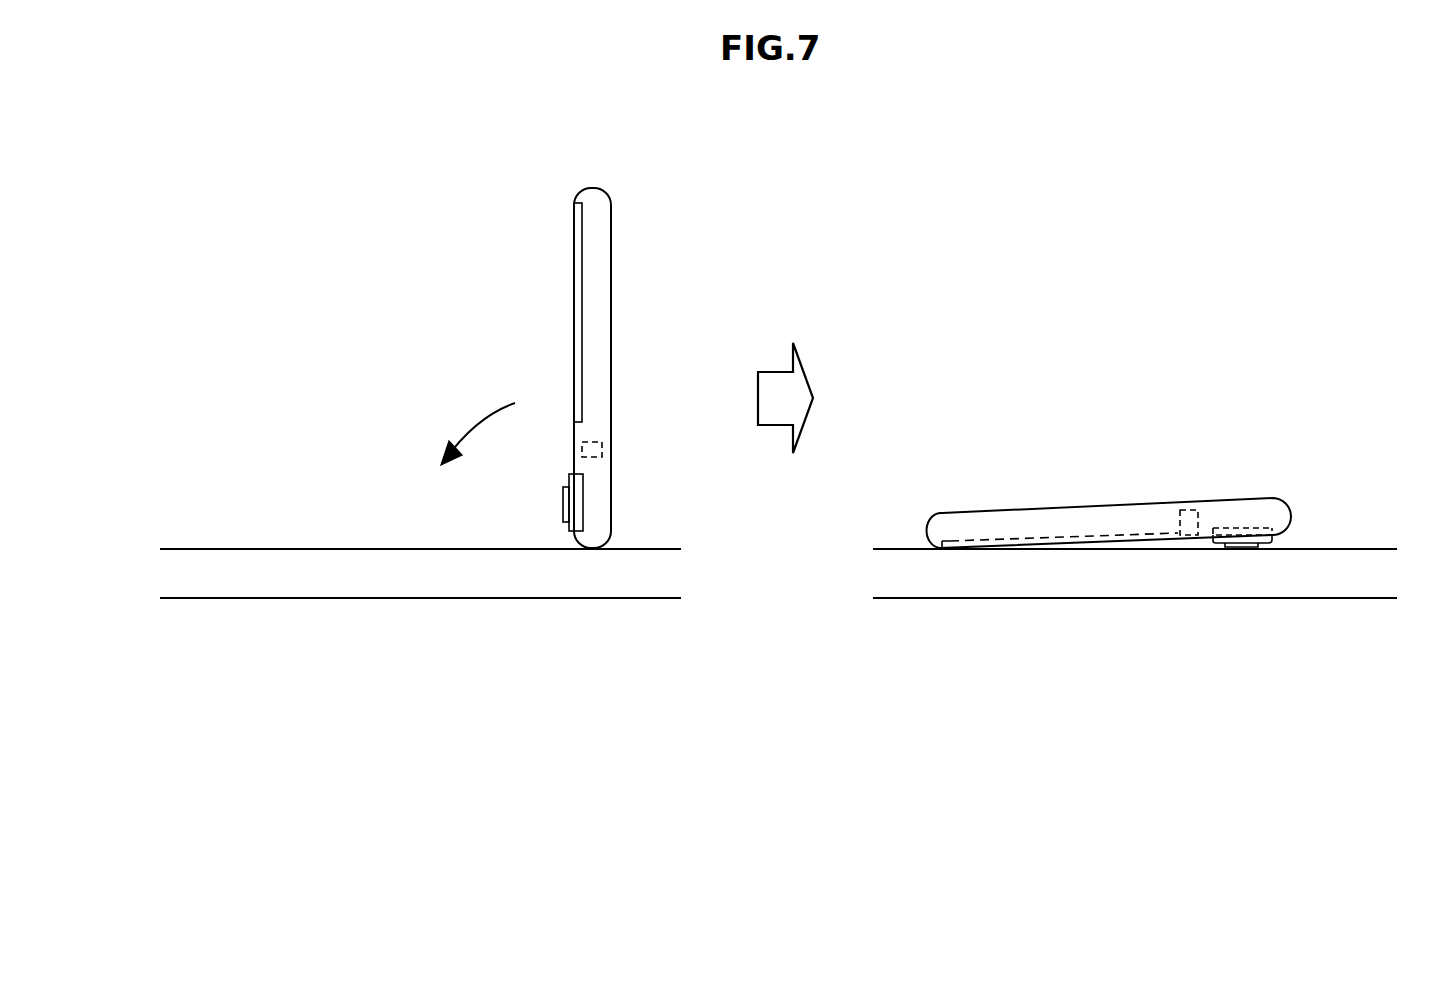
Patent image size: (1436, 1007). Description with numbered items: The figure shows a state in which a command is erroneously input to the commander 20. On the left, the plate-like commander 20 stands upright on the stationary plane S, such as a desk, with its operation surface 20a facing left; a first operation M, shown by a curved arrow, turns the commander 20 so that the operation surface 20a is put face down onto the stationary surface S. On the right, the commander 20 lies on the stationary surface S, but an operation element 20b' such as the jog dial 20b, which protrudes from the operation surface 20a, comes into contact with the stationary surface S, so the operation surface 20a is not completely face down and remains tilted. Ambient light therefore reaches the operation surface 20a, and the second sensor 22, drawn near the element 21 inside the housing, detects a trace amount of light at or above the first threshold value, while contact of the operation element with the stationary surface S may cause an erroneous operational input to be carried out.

The commander 20 is at (590, 188).
The operation surface 20a is at (574, 430).
The jog dial 20b is at (1252, 586).
The operation element 20b' is at (528, 502).
The sensor 21 is at (602, 441).
The second sensor 22 is at (582, 450).
The first operation M is at (474, 421).
The stationary plane S is at (645, 549).